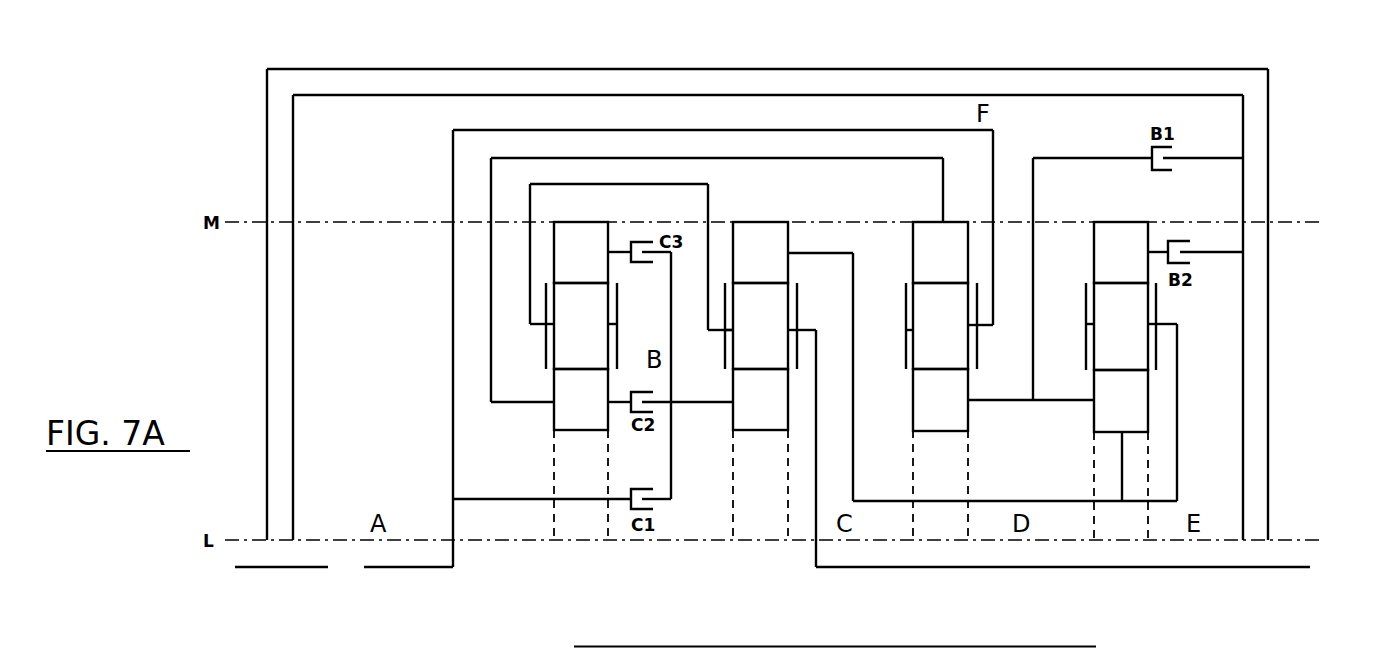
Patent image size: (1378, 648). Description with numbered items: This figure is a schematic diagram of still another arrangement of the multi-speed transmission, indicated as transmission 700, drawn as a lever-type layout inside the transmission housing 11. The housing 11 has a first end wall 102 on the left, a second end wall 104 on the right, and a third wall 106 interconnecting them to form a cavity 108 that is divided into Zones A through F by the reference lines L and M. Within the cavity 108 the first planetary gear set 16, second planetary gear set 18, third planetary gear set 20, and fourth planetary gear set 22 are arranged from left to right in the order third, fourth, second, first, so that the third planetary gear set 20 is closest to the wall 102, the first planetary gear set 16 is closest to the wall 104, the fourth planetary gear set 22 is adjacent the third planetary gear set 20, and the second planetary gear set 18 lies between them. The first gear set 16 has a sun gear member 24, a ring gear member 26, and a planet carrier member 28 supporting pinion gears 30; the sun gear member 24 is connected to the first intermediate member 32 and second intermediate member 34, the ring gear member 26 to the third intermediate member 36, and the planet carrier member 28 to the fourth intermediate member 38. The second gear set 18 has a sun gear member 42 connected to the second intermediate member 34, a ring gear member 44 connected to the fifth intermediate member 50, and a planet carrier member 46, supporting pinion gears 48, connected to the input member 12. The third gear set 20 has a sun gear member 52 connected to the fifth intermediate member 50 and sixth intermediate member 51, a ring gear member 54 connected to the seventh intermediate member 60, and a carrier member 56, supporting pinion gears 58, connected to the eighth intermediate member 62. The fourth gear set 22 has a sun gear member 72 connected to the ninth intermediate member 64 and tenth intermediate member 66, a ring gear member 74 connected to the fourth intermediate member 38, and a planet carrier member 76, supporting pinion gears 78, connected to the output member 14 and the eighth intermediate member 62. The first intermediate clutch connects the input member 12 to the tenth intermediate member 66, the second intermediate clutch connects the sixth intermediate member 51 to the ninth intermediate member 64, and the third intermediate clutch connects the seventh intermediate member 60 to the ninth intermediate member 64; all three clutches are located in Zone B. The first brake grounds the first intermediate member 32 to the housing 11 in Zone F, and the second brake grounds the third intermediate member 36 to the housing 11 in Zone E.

The multi-speed transmission 700 is at (1283, 126).
The transmission housing 11 is at (768, 289).
The input member 12 is at (403, 562).
The output member 14 is at (1278, 567).
The first planetary gear set 16 is at (1116, 351).
The second planetary gear set 18 is at (948, 354).
The third planetary gear set 20 is at (577, 351).
The fourth planetary gear set 22 is at (759, 356).
The sun gear member 24 is at (1121, 401).
The ring gear member 26 is at (1121, 252).
The planet carrier member 28 is at (1086, 300).
The pinion gears 30 is at (1121, 326).
The first intermediate member 32 is at (1036, 338).
The second intermediate member 34 is at (1013, 403).
The third intermediate member 36 is at (1160, 250).
The fourth intermediate member 38 is at (1178, 440).
The sun gear member 42 is at (940, 400).
The ring gear member 44 is at (940, 252).
The planet carrier member 46 is at (906, 318).
The pinion gears 48 is at (940, 326).
The fifth intermediate member 50 is at (885, 160).
The sixth intermediate member 51 is at (620, 406).
The sun gear member 52 is at (581, 399).
The ring gear member 54 is at (581, 252).
The carrier member 56 is at (617, 312).
The pinion gears 58 is at (581, 326).
The seventh intermediate member 60 is at (620, 248).
The eighth intermediate member 62 is at (690, 184).
The ninth intermediate member 64 is at (712, 400).
The tenth intermediate member 66 is at (665, 505).
The sun gear member 72 is at (760, 399).
The ring gear member 74 is at (760, 252).
The planet carrier member 76 is at (725, 340).
The pinion gears 78 is at (760, 326).
The first end wall 102 is at (280, 140).
The second end wall 104 is at (1265, 315).
The third wall 106 is at (830, 80).
The cavity 108 is at (1220, 122).